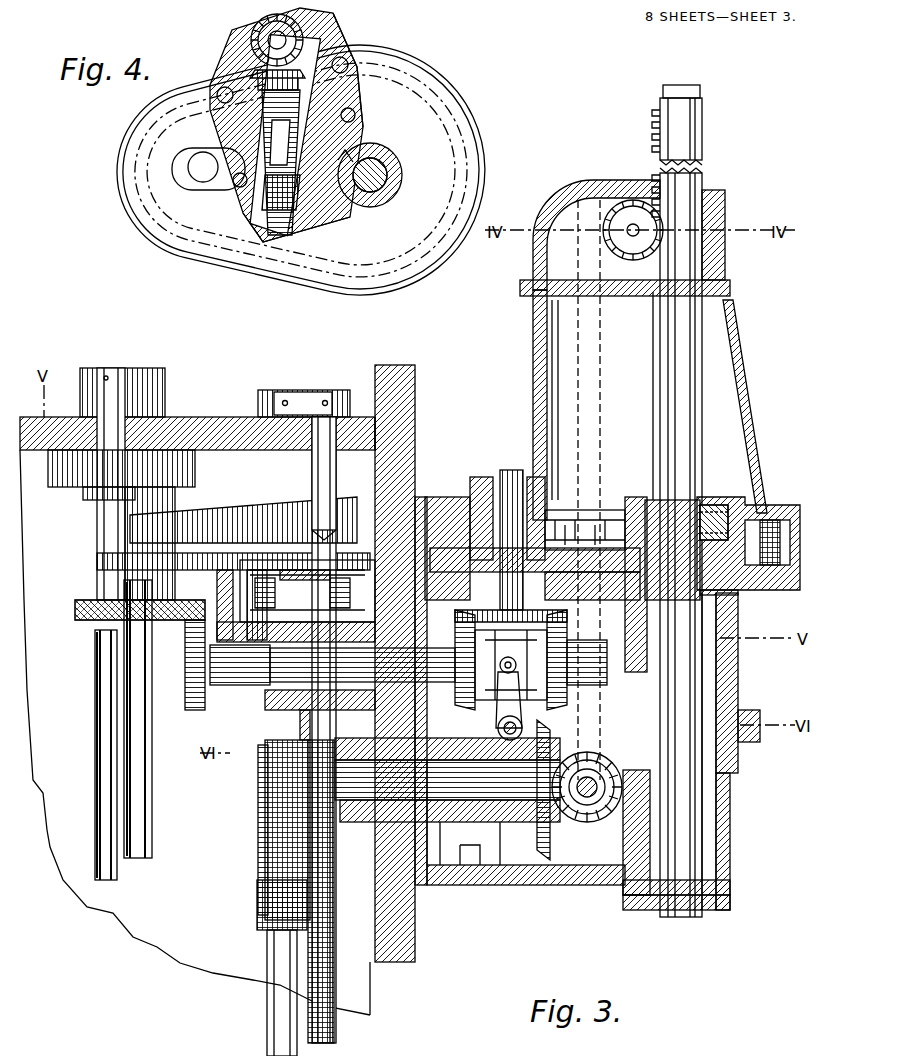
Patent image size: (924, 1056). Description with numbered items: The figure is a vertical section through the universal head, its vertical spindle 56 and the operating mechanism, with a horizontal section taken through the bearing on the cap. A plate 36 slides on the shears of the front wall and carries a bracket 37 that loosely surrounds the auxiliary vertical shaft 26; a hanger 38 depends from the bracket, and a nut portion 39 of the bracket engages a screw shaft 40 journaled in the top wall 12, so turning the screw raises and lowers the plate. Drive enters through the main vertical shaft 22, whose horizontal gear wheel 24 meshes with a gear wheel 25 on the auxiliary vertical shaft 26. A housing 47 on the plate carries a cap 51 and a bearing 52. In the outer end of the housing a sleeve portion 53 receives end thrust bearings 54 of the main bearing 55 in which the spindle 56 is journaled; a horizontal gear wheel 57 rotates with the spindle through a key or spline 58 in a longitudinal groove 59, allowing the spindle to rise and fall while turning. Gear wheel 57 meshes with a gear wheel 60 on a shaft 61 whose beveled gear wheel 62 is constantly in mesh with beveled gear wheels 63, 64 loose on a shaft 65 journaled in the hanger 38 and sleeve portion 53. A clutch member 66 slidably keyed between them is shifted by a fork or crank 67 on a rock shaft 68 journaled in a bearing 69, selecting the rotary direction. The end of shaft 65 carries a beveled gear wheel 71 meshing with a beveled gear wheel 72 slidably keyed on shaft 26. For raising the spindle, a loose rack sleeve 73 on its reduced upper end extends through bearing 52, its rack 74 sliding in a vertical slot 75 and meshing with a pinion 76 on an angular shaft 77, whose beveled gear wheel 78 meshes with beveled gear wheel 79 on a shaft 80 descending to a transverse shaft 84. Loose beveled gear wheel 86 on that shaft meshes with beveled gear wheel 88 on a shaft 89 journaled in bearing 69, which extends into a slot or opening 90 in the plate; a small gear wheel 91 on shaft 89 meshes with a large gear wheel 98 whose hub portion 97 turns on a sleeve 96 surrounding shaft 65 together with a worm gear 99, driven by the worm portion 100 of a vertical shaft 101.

In FIG. 3, the top wall 12 is at (186, 418).
In FIG. 3, the main vertical shaft 22 is at (96, 692).
In FIG. 3, the horizontal gear wheel 24 is at (62, 490).
In FIG. 3, the gear wheel 25 is at (200, 482).
In FIG. 3, the auxiliary vertical shaft 26 is at (152, 725).
In FIG. 3, the plate 36 is at (405, 962).
In FIG. 3, the bracket 37 is at (97, 544).
In FIG. 3, the hanger 38 is at (235, 688).
In FIG. 3, the nut portion 39 is at (345, 520).
In FIG. 3, the screw shaft 40 is at (318, 392).
In FIG. 3, the housing 47 is at (487, 886).
In FIG. 3, the cap 51 is at (748, 400).
In FIG. 4, the cap 51 is at (480, 126).
In FIG. 3, the bearing 52 is at (731, 284).
In FIG. 4, the bearing 52 is at (330, 48).
In FIG. 3, the sleeve portion 53 is at (738, 670).
In FIG. 3, the end thrust bearings 54 is at (730, 609).
In FIG. 3, the main bearing 55 is at (730, 904).
In FIG. 3, the vertical spindle 56 is at (677, 918).
In FIG. 4, the vertical spindle 56 is at (380, 170).
In FIG. 3, the horizontal gear wheel 57 is at (752, 517).
In FIG. 3, the key or spline 58 is at (714, 526).
In FIG. 3, the longitudinal groove 59 is at (705, 505).
In FIG. 3, the gear wheel 60 is at (555, 518).
In FIG. 4, the gear wheel 60 is at (165, 242).
In FIG. 3, the shaft 61 is at (510, 478).
In FIG. 3, the beveled gear wheel 62 is at (545, 612).
In FIG. 3, the beveled gear wheel 63 is at (470, 705).
In FIG. 3, the beveled gear wheel 64 is at (570, 620).
In FIG. 3, the shaft 65 is at (420, 648).
In FIG. 3, the clutch member 66 is at (500, 635).
In FIG. 3, the fork or crank 67 is at (505, 675).
In FIG. 3, the rock shaft 68 is at (498, 730).
In FIG. 3, the bearing 69 is at (447, 866).
In FIG. 3, the beveled gear wheel 71 is at (186, 658).
In FIG. 3, the beveled gear wheel 72 is at (78, 605).
In FIG. 3, the rack sleeve 73 is at (703, 136).
In FIG. 4, the rack sleeve 73 is at (385, 190).
In FIG. 3, the rack 74 is at (652, 129).
In FIG. 4, the rack 74 is at (335, 165).
In FIG. 4, the vertical slot 75 is at (343, 228).
In FIG. 3, the pinion 76 is at (633, 262).
In FIG. 4, the pinion 76 is at (268, 207).
In FIG. 4, the shaft 77 is at (283, 108).
In FIG. 4, the beveled gear wheel 78 is at (258, 75).
In FIG. 4, the beveled gear wheel 79 is at (300, 35).
In FIG. 3, the shaft 80 is at (601, 403).
In FIG. 4, the shaft 80 is at (272, 38).
In FIG. 3, the transverse shaft 84 is at (587, 800).
In FIG. 3, the beveled gear wheel 86 is at (575, 812).
In FIG. 3, the beveled gear wheel 88 is at (538, 855).
In FIG. 3, the shaft 89 is at (300, 803).
In FIG. 3, the slot or opening 90 is at (403, 691).
In FIG. 3, the small gear wheel 91 is at (355, 812).
In FIG. 3, the sleeve 96 is at (272, 712).
In FIG. 3, the hub portion 97 is at (319, 721).
In FIG. 3, the large gear wheel 98 is at (360, 582).
In FIG. 3, the worm gear 99 is at (285, 732).
In FIG. 3, the worm portion 100 is at (257, 918).
In FIG. 3, the vertical shaft 101 is at (280, 1016).